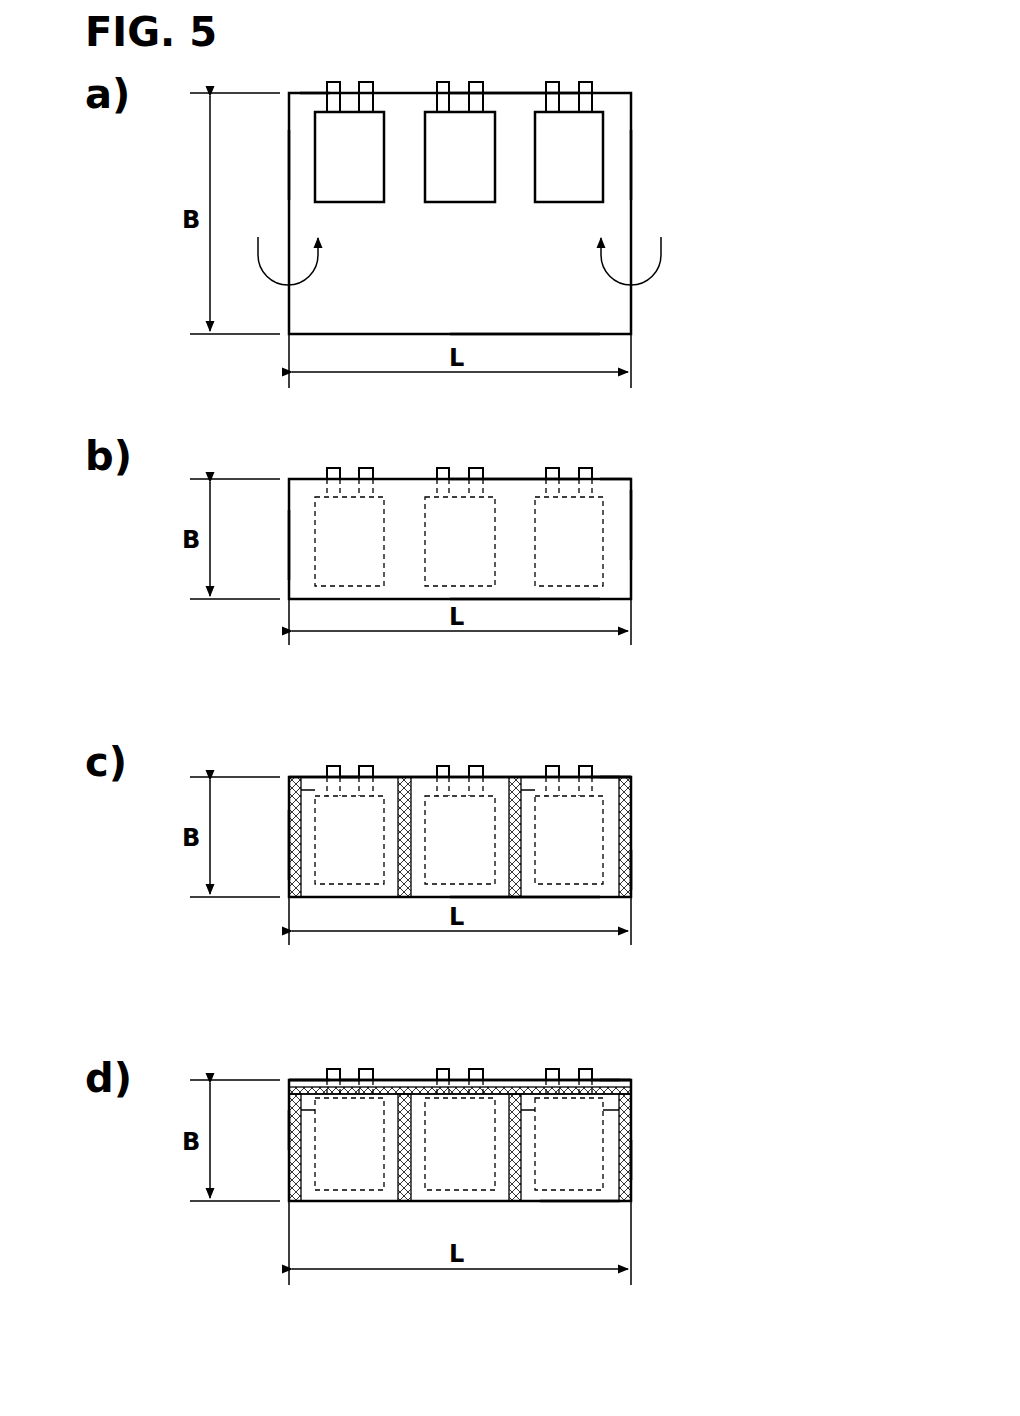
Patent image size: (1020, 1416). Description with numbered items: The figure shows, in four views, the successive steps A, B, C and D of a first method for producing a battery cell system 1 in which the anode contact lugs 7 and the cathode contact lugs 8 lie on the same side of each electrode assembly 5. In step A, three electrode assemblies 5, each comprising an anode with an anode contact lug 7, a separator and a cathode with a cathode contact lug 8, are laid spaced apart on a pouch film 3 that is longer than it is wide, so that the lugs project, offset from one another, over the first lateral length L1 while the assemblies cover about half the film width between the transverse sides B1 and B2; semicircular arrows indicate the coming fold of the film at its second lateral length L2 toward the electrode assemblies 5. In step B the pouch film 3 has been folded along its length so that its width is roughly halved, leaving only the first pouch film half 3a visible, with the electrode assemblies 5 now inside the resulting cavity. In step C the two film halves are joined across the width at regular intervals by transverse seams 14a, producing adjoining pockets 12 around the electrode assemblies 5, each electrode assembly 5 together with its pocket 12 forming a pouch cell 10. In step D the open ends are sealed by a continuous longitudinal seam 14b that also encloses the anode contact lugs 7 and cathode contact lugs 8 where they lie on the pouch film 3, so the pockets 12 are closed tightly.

The battery cell system 1 is at (253, 1075).
The pouch film 3 is at (595, 303).
The first pouch film half 3a is at (625, 578).
The electrode assembly 5 is at (440, 200).
The anode contact lug 7 is at (333, 88).
The cathode contact lug 8 is at (366, 88).
The pouch cell 10 is at (296, 774).
The pocket 12 is at (320, 786).
The transverse seam 14a is at (405, 777).
The longitudinal seam 14b is at (390, 1092).
The first lateral length L1 is at (513, 92).
The second lateral length L2 is at (565, 336).
The first transverse side B1 is at (633, 158).
The second transverse side B2 is at (289, 170).
The method step A is at (690, 118).
The method step B is at (672, 492).
The method step C is at (660, 795).
The method step D is at (665, 1110).